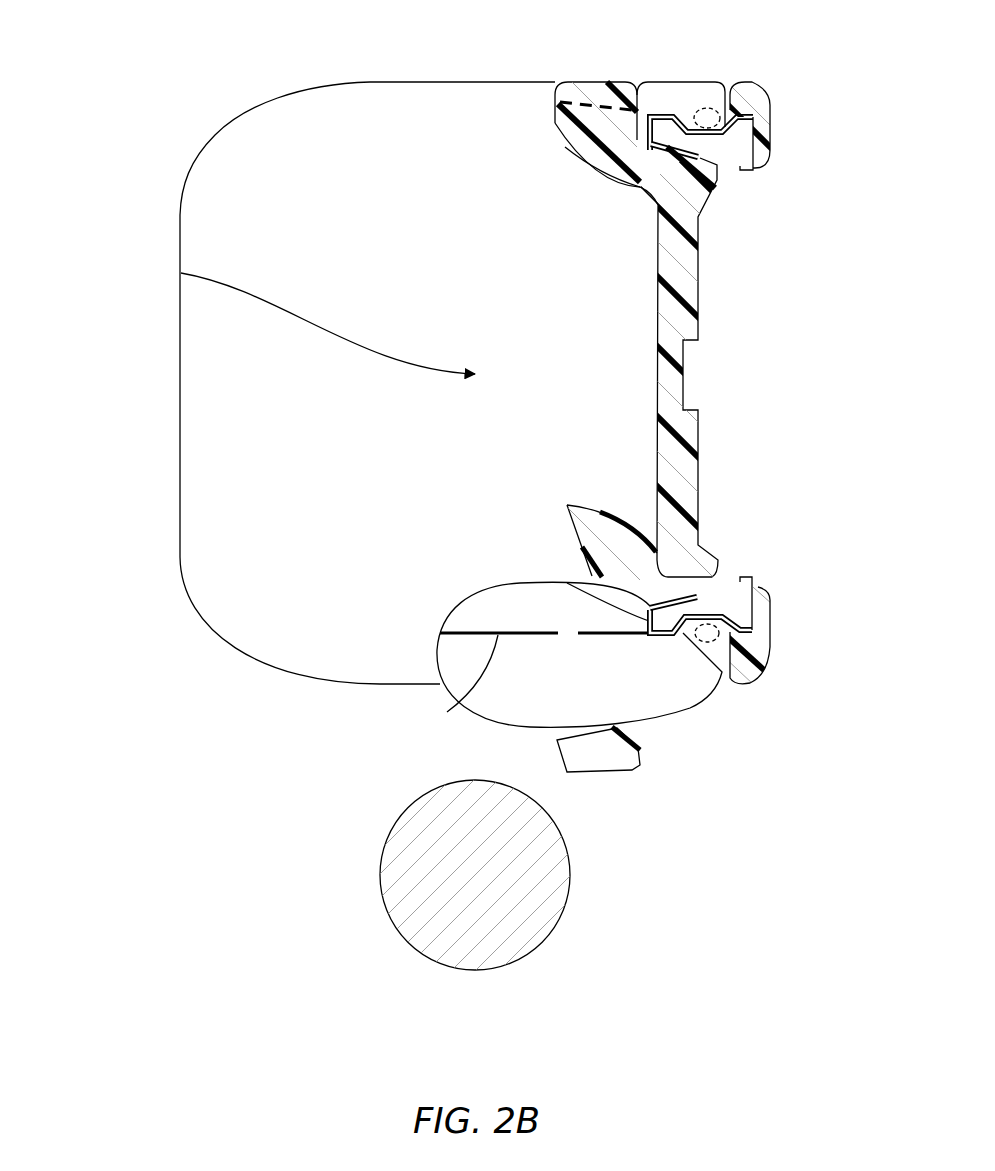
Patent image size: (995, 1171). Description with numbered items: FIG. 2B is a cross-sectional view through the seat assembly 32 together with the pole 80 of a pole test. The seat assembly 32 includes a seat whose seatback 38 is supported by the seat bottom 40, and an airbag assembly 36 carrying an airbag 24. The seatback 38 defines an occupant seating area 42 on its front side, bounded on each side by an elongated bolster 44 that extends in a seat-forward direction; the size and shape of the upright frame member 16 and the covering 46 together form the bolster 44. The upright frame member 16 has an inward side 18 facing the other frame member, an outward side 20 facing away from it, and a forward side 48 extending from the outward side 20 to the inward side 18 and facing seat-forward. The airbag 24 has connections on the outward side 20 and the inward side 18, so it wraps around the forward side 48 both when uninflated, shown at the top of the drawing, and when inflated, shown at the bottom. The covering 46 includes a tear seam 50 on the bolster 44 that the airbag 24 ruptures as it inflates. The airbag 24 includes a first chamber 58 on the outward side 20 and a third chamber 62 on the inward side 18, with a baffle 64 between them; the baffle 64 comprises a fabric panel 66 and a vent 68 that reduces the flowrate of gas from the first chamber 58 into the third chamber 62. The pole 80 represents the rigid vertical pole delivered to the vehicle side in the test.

The upright frame member 16 is at (746, 176).
The inward side 18 is at (655, 160).
The outward side 20 is at (655, 160).
The airbag 24 is at (470, 714).
The seat assembly 32 is at (170, 85).
The airbag assembly 36 is at (668, 730).
The seatback 38 is at (732, 315).
The seat bottom 40 is at (224, 432).
The occupant seating area 42 is at (181, 273).
The bolster 44 is at (565, 148).
The covering 46 is at (657, 300).
The forward side 48 is at (639, 140).
The tear seam 50 is at (558, 103).
The first chamber 58 is at (520, 730).
The third chamber 62 is at (482, 590).
The baffle 64 is at (457, 628).
The fabric panel 66 is at (462, 697).
The vent 68 is at (565, 650).
The pole 80 is at (388, 918).